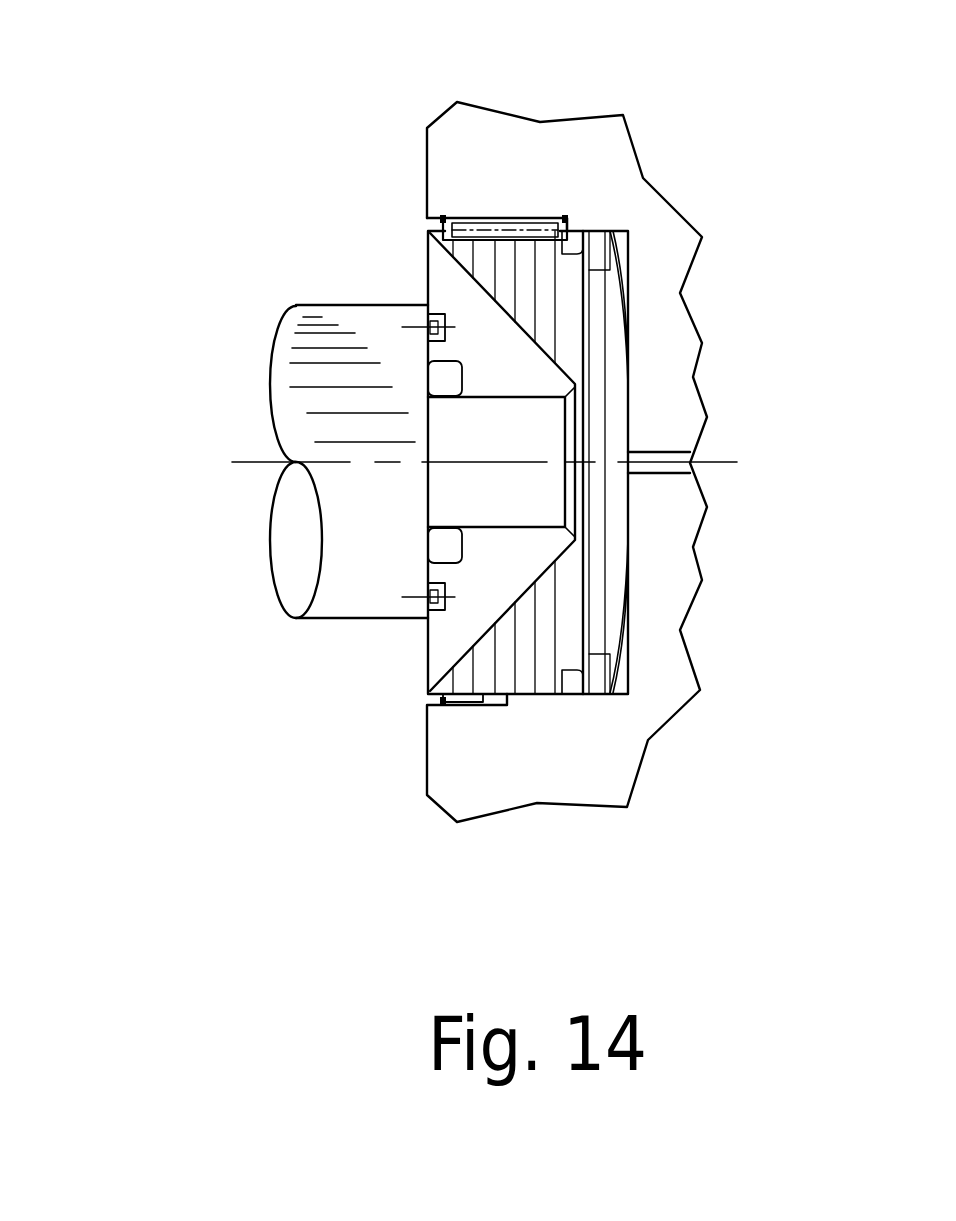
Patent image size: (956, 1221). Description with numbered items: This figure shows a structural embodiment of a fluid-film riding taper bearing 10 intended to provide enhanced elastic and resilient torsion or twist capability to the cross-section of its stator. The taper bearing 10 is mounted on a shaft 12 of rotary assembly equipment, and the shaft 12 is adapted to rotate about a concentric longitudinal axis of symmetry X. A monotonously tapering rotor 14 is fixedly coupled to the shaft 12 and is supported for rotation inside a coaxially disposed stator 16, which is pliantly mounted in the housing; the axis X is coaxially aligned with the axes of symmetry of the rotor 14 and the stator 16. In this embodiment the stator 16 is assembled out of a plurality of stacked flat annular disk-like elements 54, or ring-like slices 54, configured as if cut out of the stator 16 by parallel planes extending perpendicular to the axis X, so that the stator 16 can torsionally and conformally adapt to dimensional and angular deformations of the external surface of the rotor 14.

The taper bearing 10 is at (298, 165).
The shaft 12 is at (265, 333).
The rotor 14 is at (443, 638).
The stator 16 is at (527, 272).
The flat annular disk-like elements 54 is at (498, 673).
The longitudinal axis of symmetry X is at (250, 458).